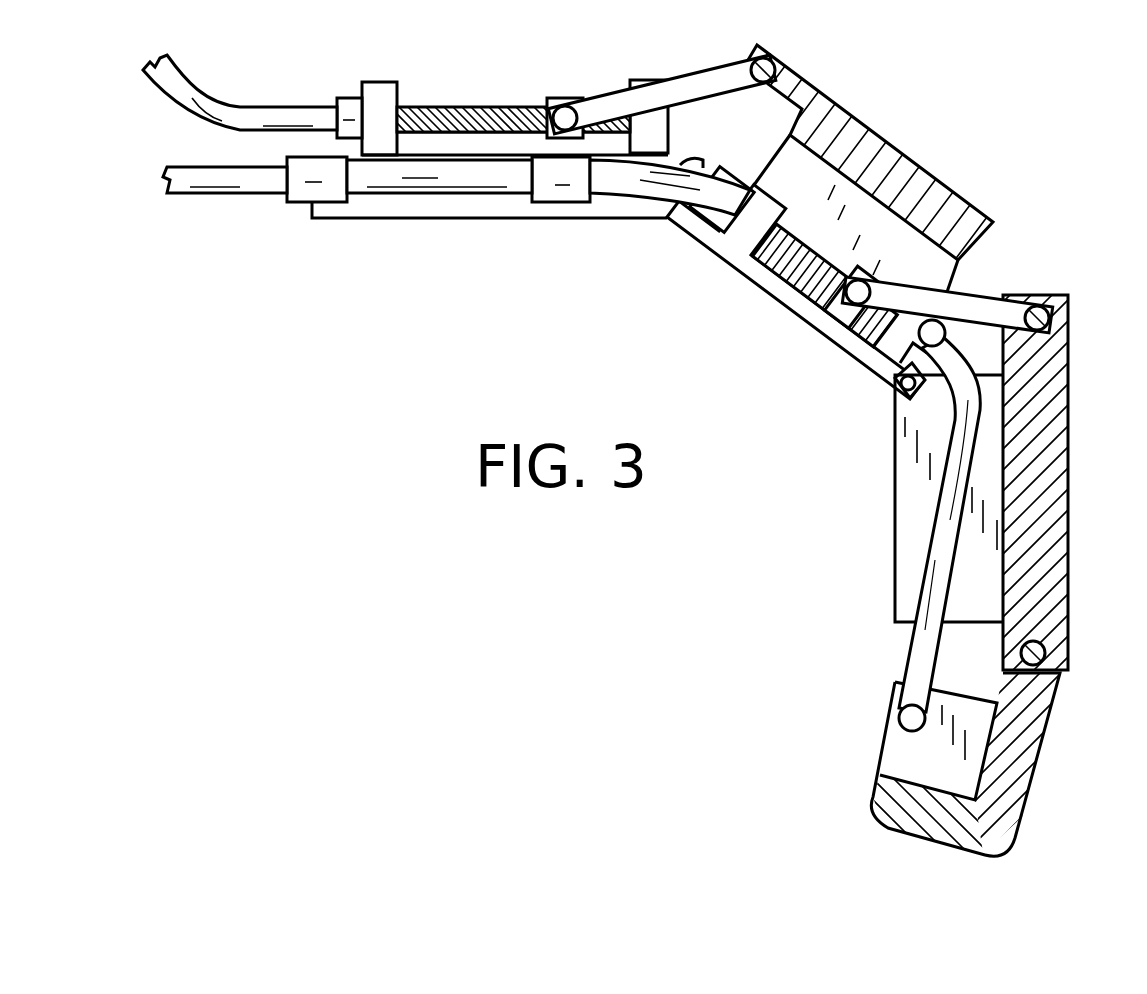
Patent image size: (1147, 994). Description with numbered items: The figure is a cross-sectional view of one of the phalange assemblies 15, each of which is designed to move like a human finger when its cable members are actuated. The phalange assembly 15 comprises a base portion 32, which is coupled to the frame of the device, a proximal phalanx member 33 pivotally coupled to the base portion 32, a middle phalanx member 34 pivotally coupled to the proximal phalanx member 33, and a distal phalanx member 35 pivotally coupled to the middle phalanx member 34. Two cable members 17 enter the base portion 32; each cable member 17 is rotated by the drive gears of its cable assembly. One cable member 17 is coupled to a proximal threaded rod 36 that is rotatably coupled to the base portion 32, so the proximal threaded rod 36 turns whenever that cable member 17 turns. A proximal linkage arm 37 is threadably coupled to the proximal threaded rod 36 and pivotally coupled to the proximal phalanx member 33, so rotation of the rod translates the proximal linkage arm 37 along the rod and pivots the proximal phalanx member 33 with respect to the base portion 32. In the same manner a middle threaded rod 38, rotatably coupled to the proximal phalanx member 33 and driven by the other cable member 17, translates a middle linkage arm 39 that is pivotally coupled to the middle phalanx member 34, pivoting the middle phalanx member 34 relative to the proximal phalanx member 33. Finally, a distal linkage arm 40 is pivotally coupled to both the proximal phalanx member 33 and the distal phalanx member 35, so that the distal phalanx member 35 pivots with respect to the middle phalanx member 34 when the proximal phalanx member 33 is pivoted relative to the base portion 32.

The phalange assembly 15 is at (930, 103).
The cable member 17 is at (187, 87).
The base portion 32 is at (443, 203).
The proximal phalanx member 33 is at (928, 193).
The middle phalanx member 34 is at (1033, 498).
The distal phalanx member 35 is at (1023, 748).
The proximal threaded rod 36 is at (413, 105).
The proximal linkage arm 37 is at (725, 80).
The middle threaded rod 38 is at (793, 250).
The middle linkage arm 39 is at (972, 297).
The distal linkage arm 40 is at (938, 563).